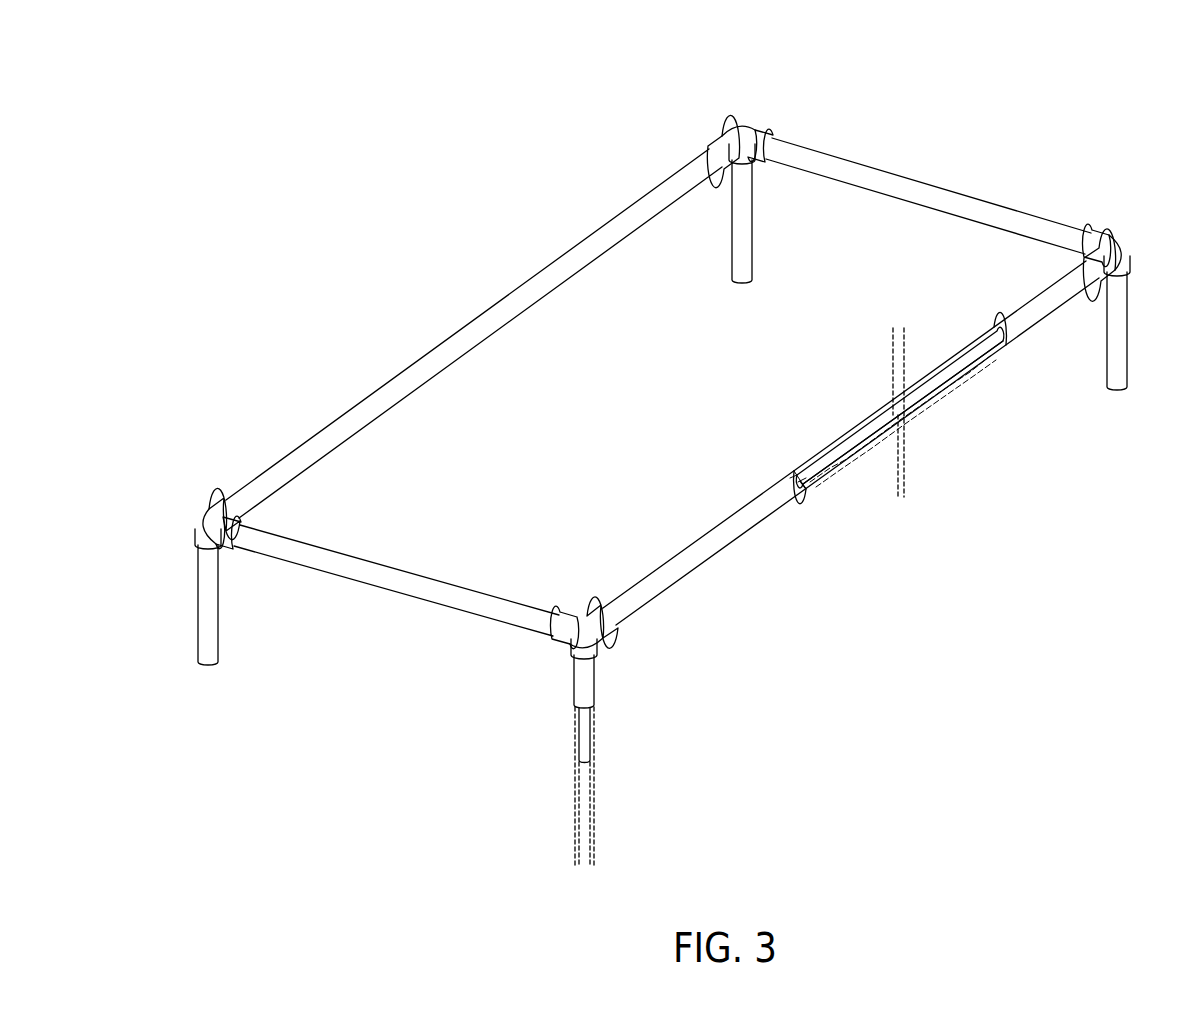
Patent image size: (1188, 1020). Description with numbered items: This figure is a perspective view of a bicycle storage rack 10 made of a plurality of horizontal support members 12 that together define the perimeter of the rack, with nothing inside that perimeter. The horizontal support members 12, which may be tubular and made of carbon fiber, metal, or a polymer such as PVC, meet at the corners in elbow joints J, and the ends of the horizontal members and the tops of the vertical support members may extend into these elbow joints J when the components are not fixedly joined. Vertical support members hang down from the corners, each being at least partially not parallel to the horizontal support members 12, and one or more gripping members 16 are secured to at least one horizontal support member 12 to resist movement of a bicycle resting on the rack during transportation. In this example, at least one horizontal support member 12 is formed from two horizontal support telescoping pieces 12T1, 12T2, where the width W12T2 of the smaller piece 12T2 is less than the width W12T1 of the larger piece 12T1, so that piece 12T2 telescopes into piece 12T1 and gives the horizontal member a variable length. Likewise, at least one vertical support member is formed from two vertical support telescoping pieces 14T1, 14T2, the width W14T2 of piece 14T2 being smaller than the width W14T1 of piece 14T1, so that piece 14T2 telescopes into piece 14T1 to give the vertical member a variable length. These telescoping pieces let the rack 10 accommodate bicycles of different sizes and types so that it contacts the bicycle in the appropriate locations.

The bicycle storage rack 10 is at (940, 75).
The horizontal support member 12 is at (662, 395).
The elbow joint J is at (745, 133).
The gripping member 16 is at (707, 552).
The horizontal support telescoping piece 12T1 is at (968, 364).
The horizontal support telescoping piece 12T2 is at (803, 488).
The vertical support telescoping piece 14T1 is at (587, 668).
The vertical support telescoping piece 14T2 is at (583, 733).
The width of horizontal support telescoping piece 12T1 W12T1 is at (899, 385).
The width of horizontal support telescoping piece 12T2 W12T2 is at (935, 475).
The width of vertical support telescoping piece 14T1 W14T1 is at (575, 802).
The width of vertical support telescoping piece 14T2 W14T2 is at (575, 790).